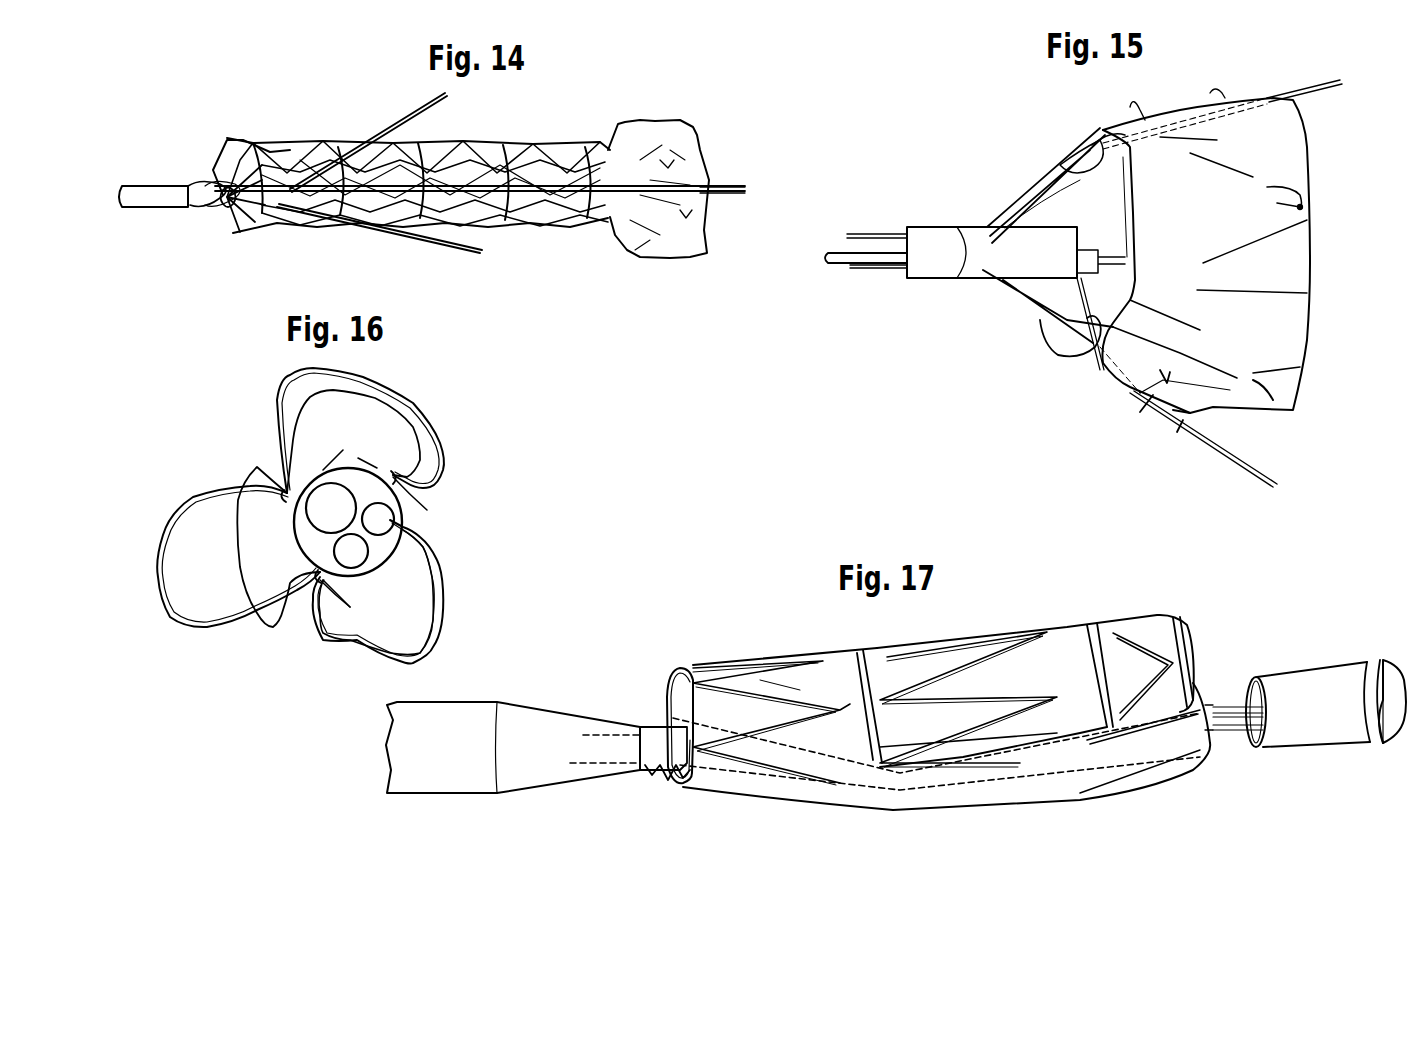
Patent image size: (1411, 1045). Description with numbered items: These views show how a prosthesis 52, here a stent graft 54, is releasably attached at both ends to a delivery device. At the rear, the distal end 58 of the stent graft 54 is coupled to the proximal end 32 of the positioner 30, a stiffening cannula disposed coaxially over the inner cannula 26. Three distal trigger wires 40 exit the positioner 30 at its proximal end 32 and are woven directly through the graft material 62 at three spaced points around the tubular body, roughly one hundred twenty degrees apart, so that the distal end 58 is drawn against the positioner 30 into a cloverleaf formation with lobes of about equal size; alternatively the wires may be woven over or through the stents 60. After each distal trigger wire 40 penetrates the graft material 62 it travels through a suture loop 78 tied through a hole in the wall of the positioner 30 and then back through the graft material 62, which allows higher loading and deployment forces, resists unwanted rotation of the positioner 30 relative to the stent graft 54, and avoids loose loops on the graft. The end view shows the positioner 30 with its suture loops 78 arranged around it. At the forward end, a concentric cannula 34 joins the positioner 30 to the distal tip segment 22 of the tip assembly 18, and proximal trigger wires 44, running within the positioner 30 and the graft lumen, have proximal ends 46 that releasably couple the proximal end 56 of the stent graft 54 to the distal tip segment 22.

In FIG. 17, the tip assembly 18 is at (412, 782).
In FIG. 17, the distal tip segment 22 is at (608, 770).
In FIG. 15, the inner cannula 26 is at (837, 268).
In FIG. 17, the inner cannula 26 is at (1222, 705).
In FIG. 14, the positioner 30 is at (172, 184).
In FIG. 15, the positioner 30 is at (958, 280).
In FIG. 16, the positioner 30 is at (387, 547).
In FIG. 17, the positioner 30 is at (1303, 740).
In FIG. 14, the proximal end of the positioner 32 is at (218, 208).
In FIG. 15, the proximal end of the positioner 32 is at (1058, 285).
In FIG. 16, the proximal end of the positioner 32 is at (283, 531).
In FIG. 17, the proximal end of the positioner 32 is at (1288, 675).
In FIG. 17, the concentric cannula 34 is at (655, 740).
In FIG. 14, the distal trigger wires 40 is at (330, 135).
In FIG. 15, the distal trigger wires 40 is at (884, 234).
In FIG. 17, the proximal trigger wires 44 is at (710, 770).
In FIG. 17, the proximal ends of the proximal trigger wires 46 is at (590, 735).
In FIG. 14, the prosthesis 52 is at (270, 150).
In FIG. 15, the prosthesis 52 is at (1250, 92).
In FIG. 14, the stent graft 54 is at (464, 181).
In FIG. 15, the stent graft 54 is at (1206, 251).
In FIG. 17, the stent graft 54 is at (840, 665).
In FIG. 14, the proximal end of the stent graft 56 is at (664, 118).
In FIG. 17, the proximal end of the stent graft 56 is at (676, 672).
In FIG. 14, the distal end of the stent graft 58 is at (227, 134).
In FIG. 14, the stents 60 is at (262, 224).
In FIG. 17, the stents 60 is at (750, 690).
In FIG. 14, the graft material 62 is at (245, 214).
In FIG. 15, the graft material 62 is at (1088, 385).
In FIG. 17, the graft material 62 is at (720, 707).
In FIG. 14, the suture loops 78 is at (205, 178).
In FIG. 15, the suture loops 78 is at (1008, 215).
In FIG. 16, the suture loops 78 is at (423, 438).